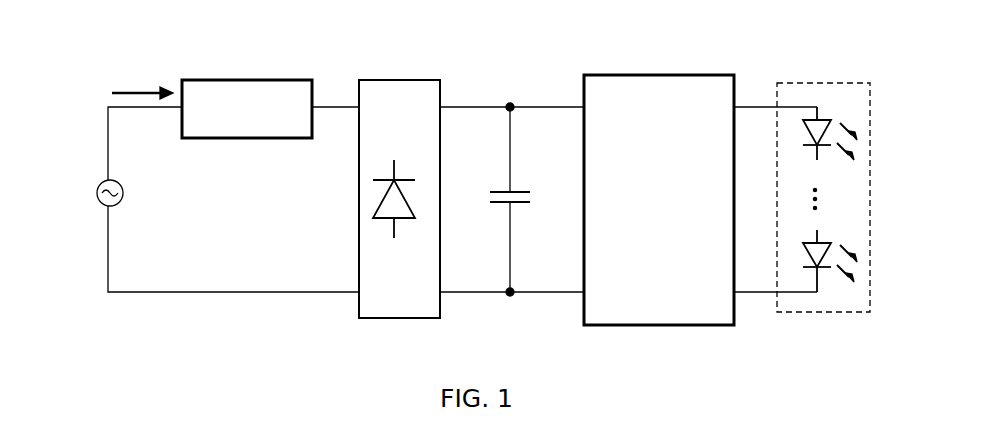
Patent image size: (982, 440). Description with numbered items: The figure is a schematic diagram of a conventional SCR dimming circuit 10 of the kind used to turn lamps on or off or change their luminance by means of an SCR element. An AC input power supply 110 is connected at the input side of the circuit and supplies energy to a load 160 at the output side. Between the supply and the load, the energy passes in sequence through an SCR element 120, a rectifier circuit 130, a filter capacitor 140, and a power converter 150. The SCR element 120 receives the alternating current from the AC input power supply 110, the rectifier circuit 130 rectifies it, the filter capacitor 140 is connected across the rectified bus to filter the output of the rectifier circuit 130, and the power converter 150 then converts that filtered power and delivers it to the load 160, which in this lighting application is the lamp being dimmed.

The SCR dimming circuit 10 is at (452, 31).
The AC input power supply 110 is at (97, 193).
The SCR element 120 is at (247, 80).
The rectifier circuit 130 is at (390, 80).
The filter capacitor 140 is at (518, 187).
The power converter 150 is at (653, 75).
The load 160 is at (825, 83).